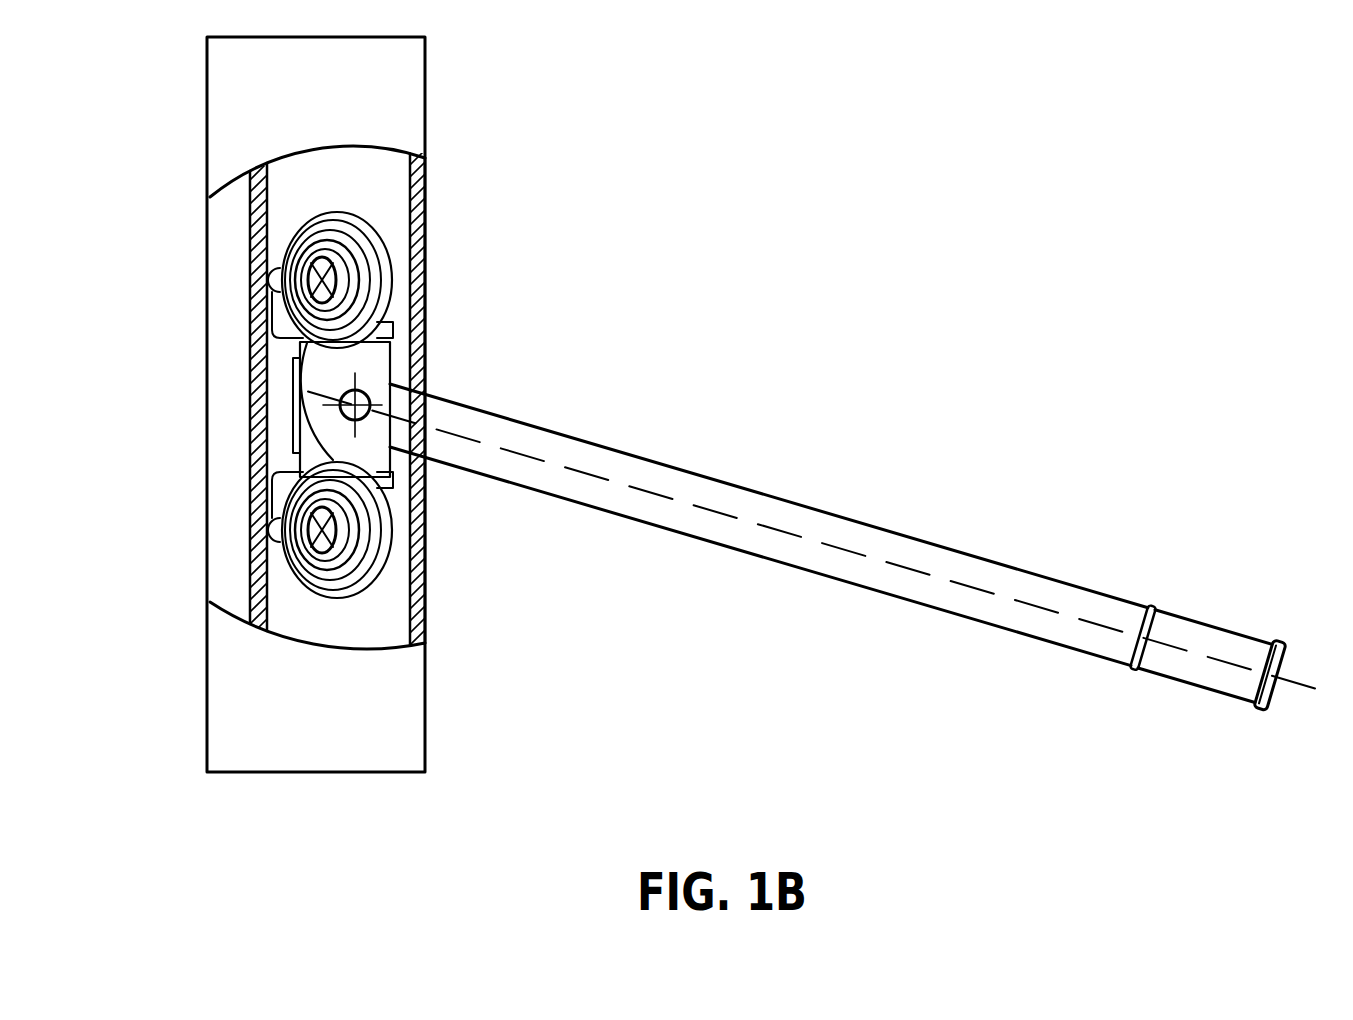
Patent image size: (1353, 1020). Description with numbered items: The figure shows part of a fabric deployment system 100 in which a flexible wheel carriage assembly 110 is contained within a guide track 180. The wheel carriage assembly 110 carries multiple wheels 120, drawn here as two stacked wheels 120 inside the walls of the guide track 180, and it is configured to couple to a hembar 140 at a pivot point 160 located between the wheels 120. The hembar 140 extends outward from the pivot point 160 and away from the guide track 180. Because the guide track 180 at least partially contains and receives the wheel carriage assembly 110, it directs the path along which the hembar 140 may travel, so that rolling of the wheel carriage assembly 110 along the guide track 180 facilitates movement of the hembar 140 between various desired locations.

The fabric deployment system 100 is at (1037, 192).
The wheel carriage assembly 110 is at (190, 608).
The wheel 120 is at (357, 260).
The hembar 140 is at (765, 495).
The pivot point 160 is at (371, 394).
The guide track 180 is at (420, 727).